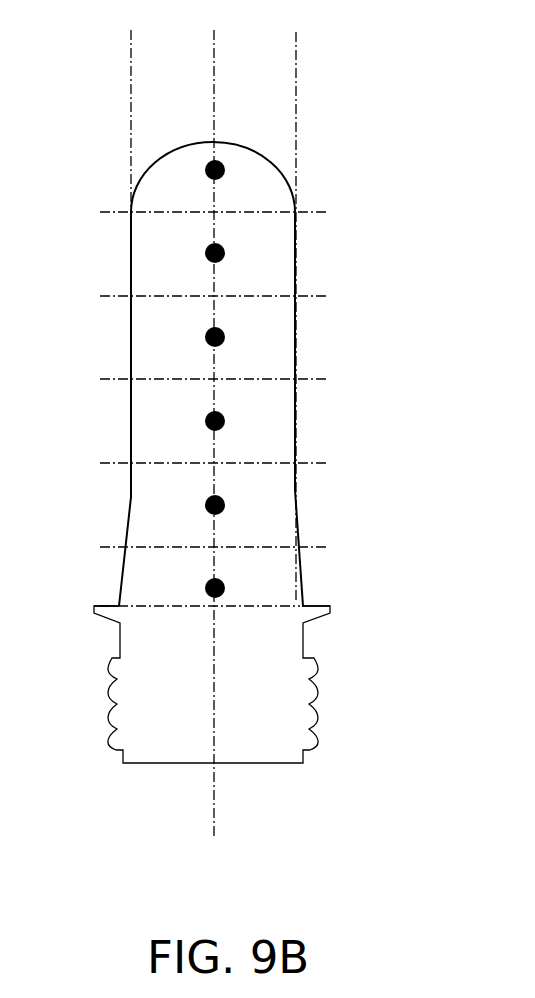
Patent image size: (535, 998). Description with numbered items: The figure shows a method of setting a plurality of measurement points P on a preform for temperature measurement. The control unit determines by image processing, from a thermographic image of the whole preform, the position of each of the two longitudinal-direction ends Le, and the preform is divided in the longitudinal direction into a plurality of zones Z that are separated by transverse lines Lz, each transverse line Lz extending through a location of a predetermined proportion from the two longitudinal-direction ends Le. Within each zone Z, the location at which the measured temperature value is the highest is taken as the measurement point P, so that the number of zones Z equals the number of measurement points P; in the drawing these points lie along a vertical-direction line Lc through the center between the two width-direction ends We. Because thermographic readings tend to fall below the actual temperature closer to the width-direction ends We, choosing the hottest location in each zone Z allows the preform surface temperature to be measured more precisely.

The width-direction ends We is at (131, 58).
The vertical-direction line Lc is at (216, 63).
The longitudinal-direction ends Le is at (214, 135).
The transverse lines Lz is at (312, 211).
The measurement point P is at (222, 162).
The zones Z is at (158, 196).